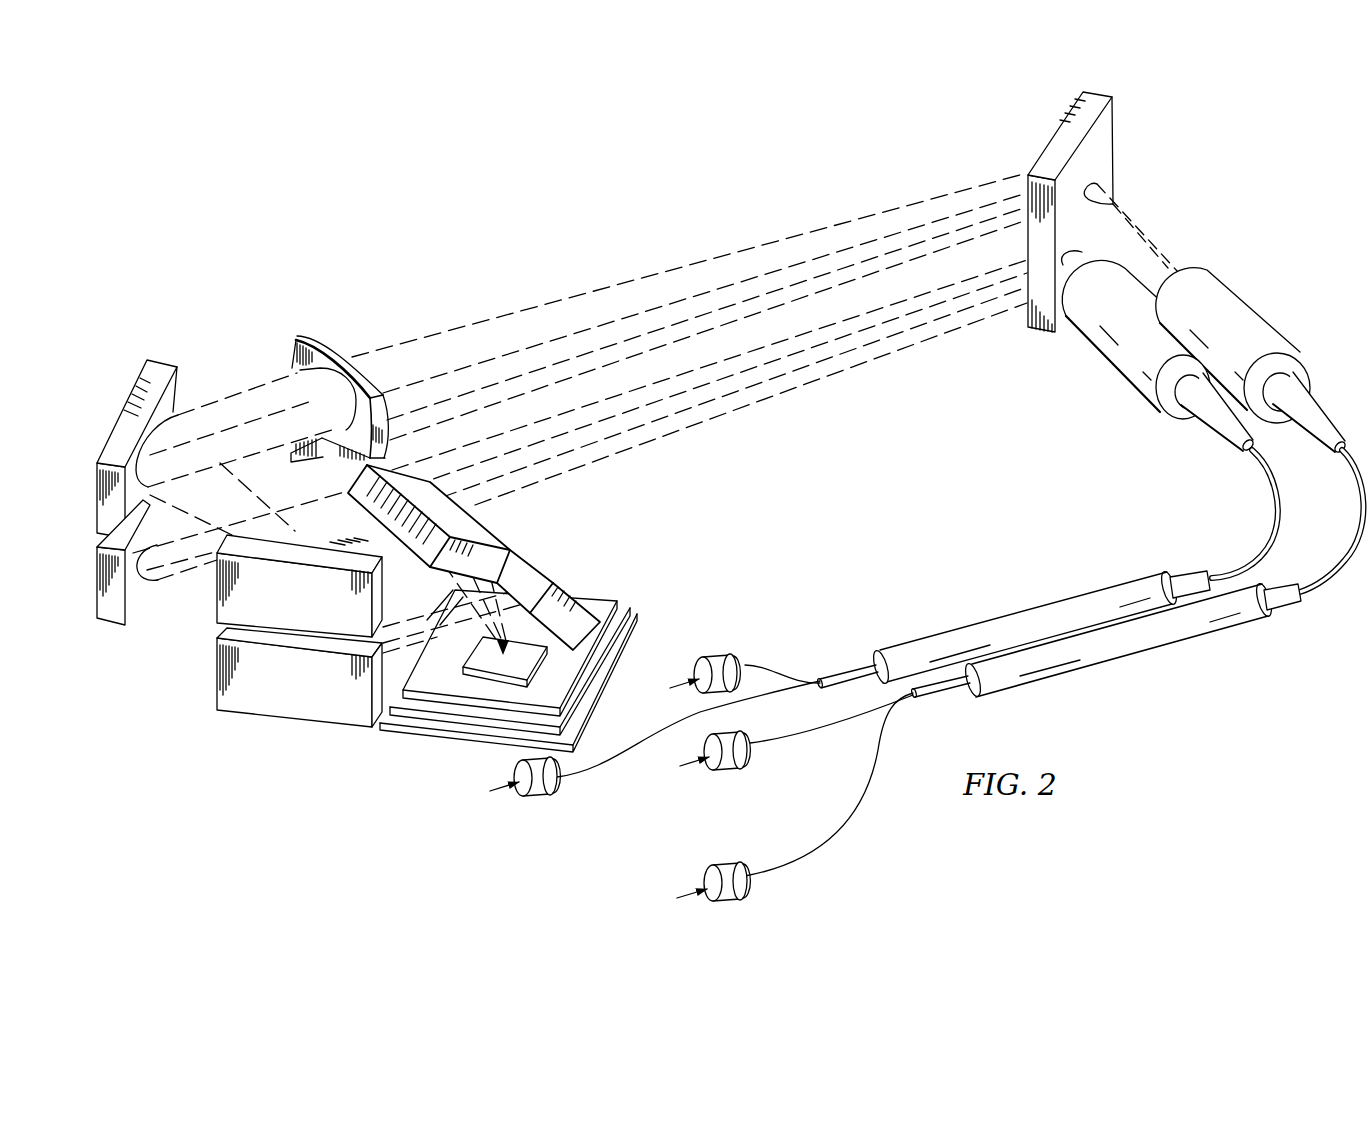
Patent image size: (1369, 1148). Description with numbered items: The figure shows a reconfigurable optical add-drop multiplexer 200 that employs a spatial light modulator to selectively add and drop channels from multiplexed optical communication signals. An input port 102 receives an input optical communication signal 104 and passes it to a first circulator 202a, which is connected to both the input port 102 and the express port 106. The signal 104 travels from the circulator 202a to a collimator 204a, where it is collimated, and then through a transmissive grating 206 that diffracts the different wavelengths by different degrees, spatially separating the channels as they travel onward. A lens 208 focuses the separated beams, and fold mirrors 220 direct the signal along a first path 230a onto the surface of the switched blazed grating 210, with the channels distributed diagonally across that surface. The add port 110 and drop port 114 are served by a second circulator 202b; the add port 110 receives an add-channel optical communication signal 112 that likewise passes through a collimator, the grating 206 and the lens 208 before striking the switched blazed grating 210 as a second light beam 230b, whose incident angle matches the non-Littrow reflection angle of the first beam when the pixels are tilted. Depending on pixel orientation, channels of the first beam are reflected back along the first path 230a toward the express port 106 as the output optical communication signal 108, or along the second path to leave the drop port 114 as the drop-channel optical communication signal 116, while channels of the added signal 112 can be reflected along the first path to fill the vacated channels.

The input port 102 is at (722, 652).
The input optical communication signal 104 is at (681, 684).
The express port 106 is at (538, 797).
The output optical communication signal 108 is at (497, 786).
The add port 110 is at (713, 860).
The add-channel optical communication signal 112 is at (683, 893).
The drop port 114 is at (737, 771).
The drop-channel optical communication signal 116 is at (688, 757).
The reconfigurable optical add-drop multiplexer 200 is at (1083, 710).
The first circulator 202a is at (1107, 584).
The second circulator 202b is at (1203, 637).
The collimator 204a is at (1107, 368).
The transmissive grating 206 is at (1057, 143).
The lens 208 is at (242, 430).
The switched blazed grating 210 is at (641, 616).
The fold mirrors 220 is at (270, 740).
The first path 230a is at (553, 630).
The second light beam 230b is at (497, 593).